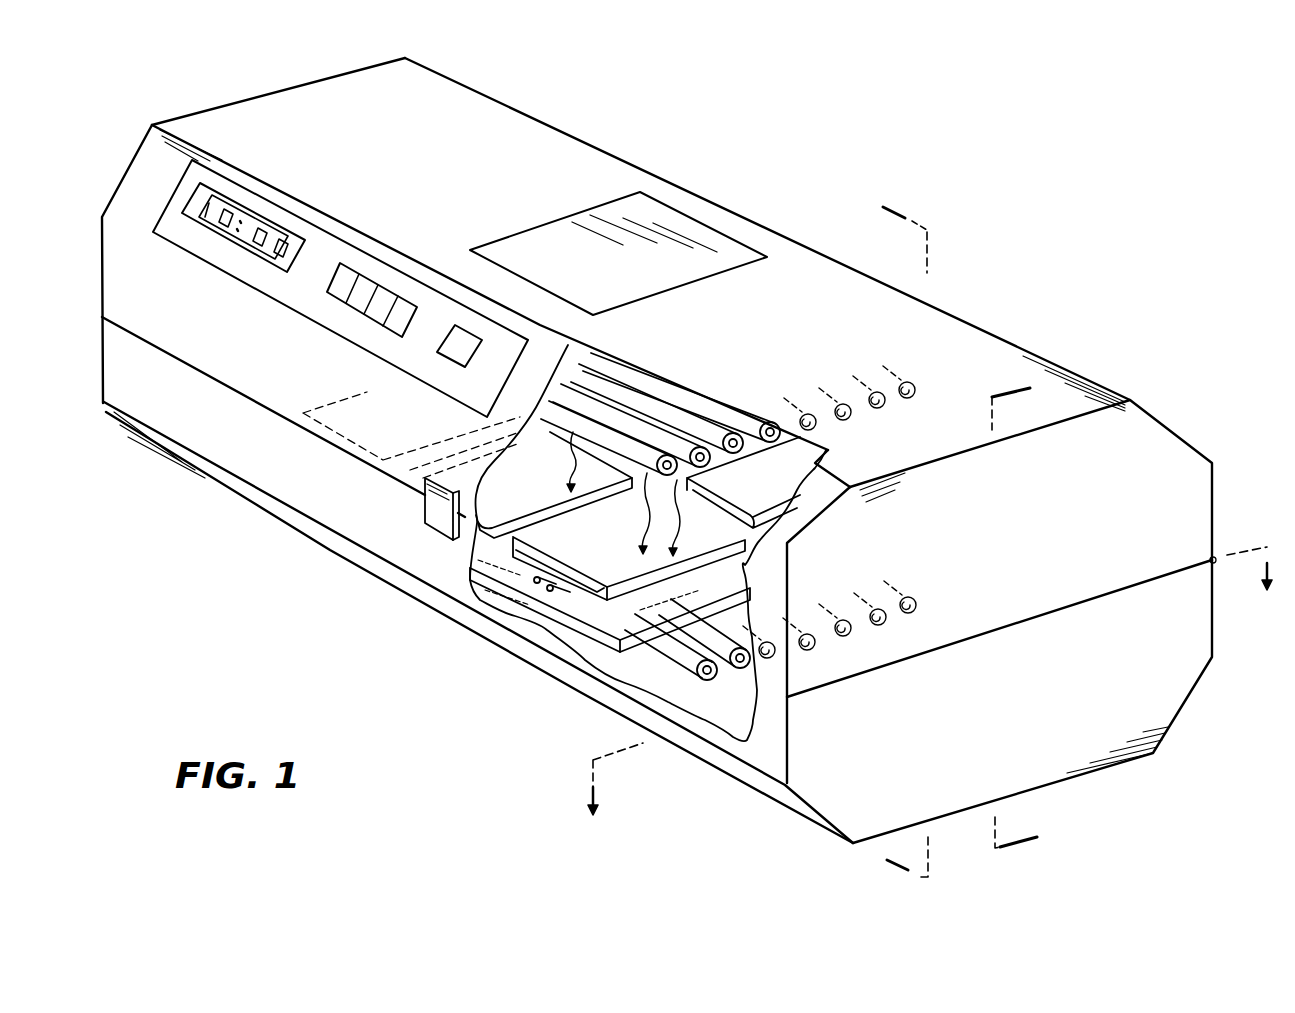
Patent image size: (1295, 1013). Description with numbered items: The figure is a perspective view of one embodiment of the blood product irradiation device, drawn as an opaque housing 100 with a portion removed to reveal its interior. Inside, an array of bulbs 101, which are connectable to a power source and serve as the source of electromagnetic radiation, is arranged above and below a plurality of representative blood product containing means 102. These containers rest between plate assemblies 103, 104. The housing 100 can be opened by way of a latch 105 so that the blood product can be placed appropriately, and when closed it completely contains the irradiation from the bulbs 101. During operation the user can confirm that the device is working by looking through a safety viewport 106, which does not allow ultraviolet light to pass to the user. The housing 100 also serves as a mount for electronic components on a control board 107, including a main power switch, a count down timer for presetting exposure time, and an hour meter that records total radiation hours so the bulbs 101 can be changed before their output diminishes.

The opaque housing 100 is at (547, 140).
The bulbs 101 is at (670, 413).
The blood product containing means 102 is at (765, 468).
The plate assembly 103 is at (737, 568).
The plate assembly 104 is at (717, 600).
The latch 105 is at (438, 520).
The safety viewport 106 is at (677, 233).
The control board 107 is at (317, 255).